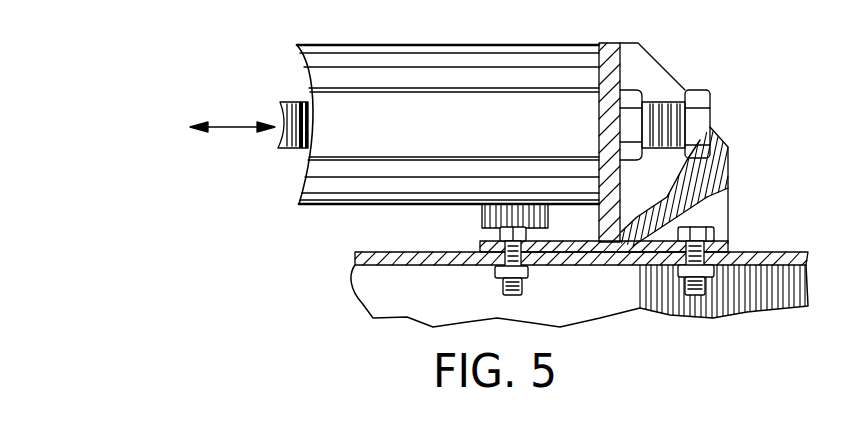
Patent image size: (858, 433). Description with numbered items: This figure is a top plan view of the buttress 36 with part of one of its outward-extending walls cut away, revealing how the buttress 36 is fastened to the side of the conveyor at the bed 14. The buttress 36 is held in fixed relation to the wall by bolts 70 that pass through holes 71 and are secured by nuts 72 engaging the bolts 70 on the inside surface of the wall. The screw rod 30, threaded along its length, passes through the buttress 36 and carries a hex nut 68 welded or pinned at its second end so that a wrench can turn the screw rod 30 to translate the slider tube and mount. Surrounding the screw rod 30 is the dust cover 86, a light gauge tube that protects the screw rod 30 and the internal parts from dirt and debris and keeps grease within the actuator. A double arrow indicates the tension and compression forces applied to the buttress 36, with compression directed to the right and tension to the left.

The bed 14 is at (377, 256).
The screw rod 30 is at (295, 102).
The buttress 36 is at (728, 172).
The hex nut 68 is at (708, 113).
The bolts 70 is at (500, 232).
The holes 71 is at (483, 265).
The nuts 72 is at (678, 268).
The dust cover 86 is at (449, 128).